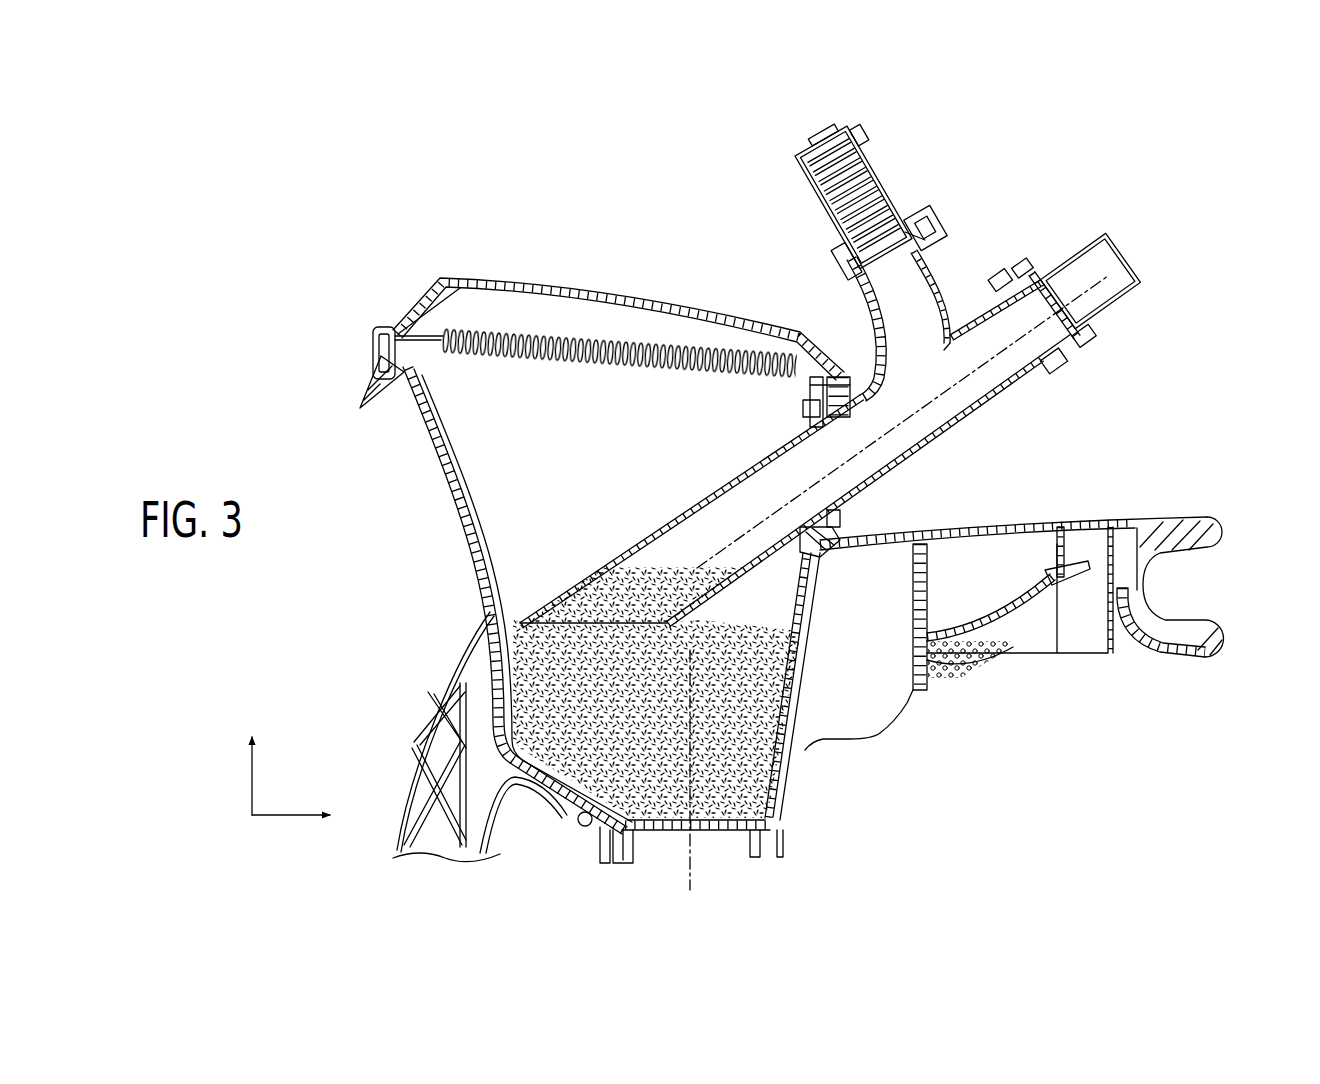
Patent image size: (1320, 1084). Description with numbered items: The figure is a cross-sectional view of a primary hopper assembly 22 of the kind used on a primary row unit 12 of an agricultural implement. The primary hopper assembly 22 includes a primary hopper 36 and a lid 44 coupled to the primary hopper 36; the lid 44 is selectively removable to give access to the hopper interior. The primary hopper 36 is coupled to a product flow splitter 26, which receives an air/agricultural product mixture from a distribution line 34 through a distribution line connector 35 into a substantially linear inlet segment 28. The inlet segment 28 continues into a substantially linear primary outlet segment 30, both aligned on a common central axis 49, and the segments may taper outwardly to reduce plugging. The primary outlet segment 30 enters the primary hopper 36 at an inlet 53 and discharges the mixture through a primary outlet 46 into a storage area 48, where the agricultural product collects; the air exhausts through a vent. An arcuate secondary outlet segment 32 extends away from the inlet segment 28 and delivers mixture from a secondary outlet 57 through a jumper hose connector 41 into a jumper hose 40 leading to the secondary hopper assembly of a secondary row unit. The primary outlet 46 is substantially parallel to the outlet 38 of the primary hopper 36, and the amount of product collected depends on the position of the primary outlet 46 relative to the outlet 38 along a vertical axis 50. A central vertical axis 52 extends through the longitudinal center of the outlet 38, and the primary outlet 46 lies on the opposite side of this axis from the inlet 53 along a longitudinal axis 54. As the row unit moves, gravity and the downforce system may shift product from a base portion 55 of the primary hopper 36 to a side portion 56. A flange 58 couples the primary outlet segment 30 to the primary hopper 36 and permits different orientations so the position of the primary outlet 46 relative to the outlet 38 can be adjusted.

The primary row unit 12 is at (362, 113).
The primary hopper assembly 22 is at (515, 215).
The product flow splitter 26 is at (986, 433).
The inlet segment 28 is at (990, 328).
The primary outlet segment 30 is at (915, 455).
The secondary outlet segment 32 is at (872, 337).
The distribution line 34 is at (1165, 190).
The distribution line connector 35 is at (1128, 250).
The primary hopper 36 is at (480, 528).
The outlet 38 is at (752, 855).
The jumper hose 40 is at (812, 125).
The jumper hose connector 41 is at (890, 183).
The lid 44 is at (597, 318).
The primary outlet 46 is at (566, 622).
The storage area 48 is at (752, 616).
The common central axis 49 is at (975, 378).
The vertical axis 50 is at (250, 780).
The central vertical axis 52 is at (688, 850).
The inlet 53 is at (835, 523).
The longitudinal axis 54 is at (288, 814).
The base portion 55 is at (776, 772).
The side portion 56 is at (830, 568).
The secondary outlet 57 is at (915, 233).
The flange 58 is at (852, 374).